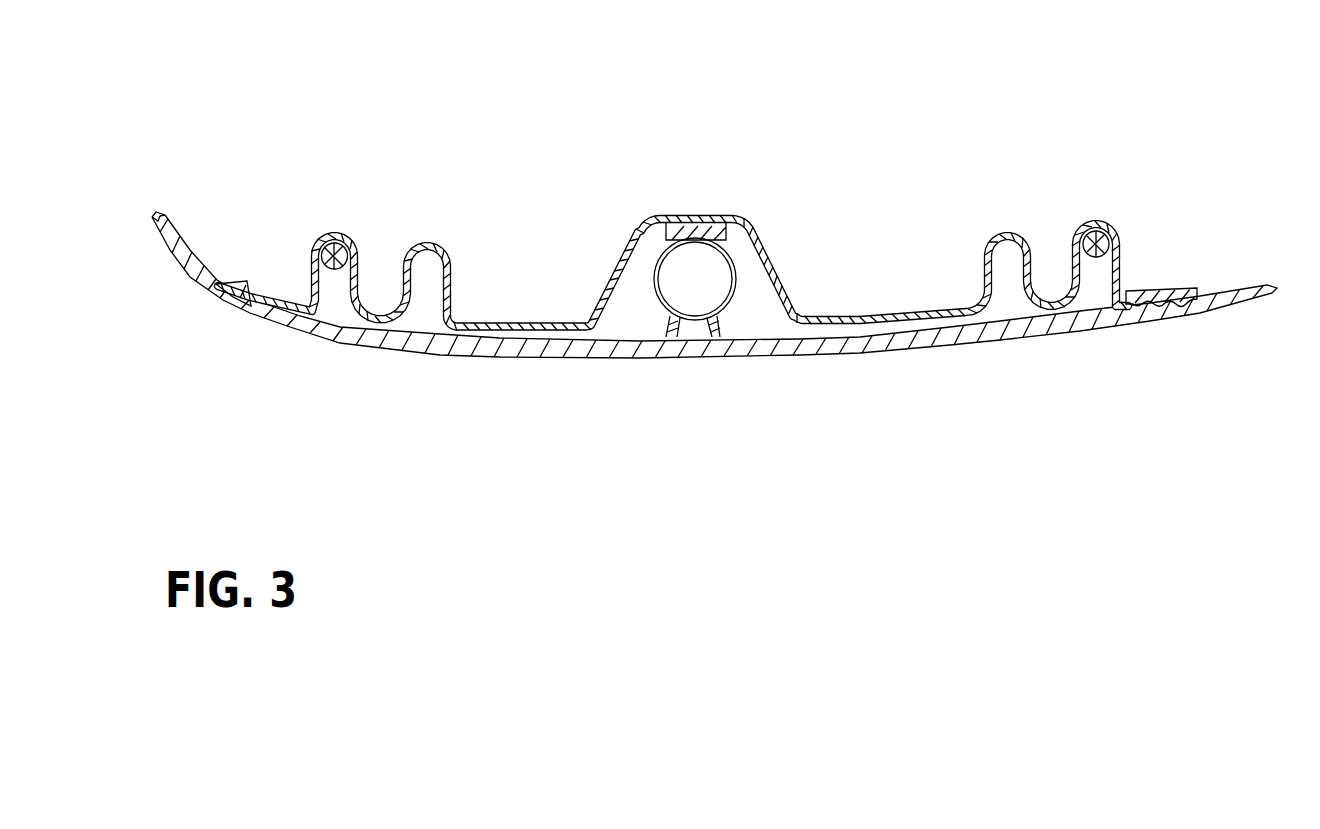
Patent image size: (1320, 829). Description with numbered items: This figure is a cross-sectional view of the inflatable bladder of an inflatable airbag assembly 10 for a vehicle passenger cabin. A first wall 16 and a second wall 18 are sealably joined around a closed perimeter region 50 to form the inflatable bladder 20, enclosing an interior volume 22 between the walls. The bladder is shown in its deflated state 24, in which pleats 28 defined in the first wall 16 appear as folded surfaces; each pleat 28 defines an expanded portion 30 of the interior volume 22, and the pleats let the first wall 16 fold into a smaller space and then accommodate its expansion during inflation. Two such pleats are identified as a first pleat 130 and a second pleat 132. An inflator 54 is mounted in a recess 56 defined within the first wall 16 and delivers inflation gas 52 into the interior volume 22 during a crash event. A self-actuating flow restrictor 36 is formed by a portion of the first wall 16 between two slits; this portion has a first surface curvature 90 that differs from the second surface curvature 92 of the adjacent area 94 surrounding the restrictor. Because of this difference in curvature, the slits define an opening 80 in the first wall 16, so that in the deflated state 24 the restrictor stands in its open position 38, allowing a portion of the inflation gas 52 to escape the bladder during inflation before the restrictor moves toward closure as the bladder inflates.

The inflatable airbag assembly 10 is at (1069, 108).
The first wall 16 is at (760, 233).
The second wall 18 is at (779, 358).
The inflatable bladder 20 is at (405, 239).
The interior volume 22 is at (610, 320).
The deflated state 24 is at (536, 308).
The pleat 28 is at (987, 236).
The expanded portion 30 is at (1003, 280).
The self-actuating flow restrictor 36 is at (300, 240).
The open position 38 is at (1102, 208).
The closed perimeter region 50 is at (1163, 287).
The inflation gas 52 is at (683, 280).
The inflator 54 is at (692, 216).
The recess 56 is at (743, 290).
The opening 80 is at (1097, 233).
The first surface curvature 90 is at (328, 262).
The second surface curvature 92 is at (330, 234).
The adjacent area 94 is at (1058, 228).
The first pleat 130 is at (307, 272).
The second pleat 132 is at (443, 243).